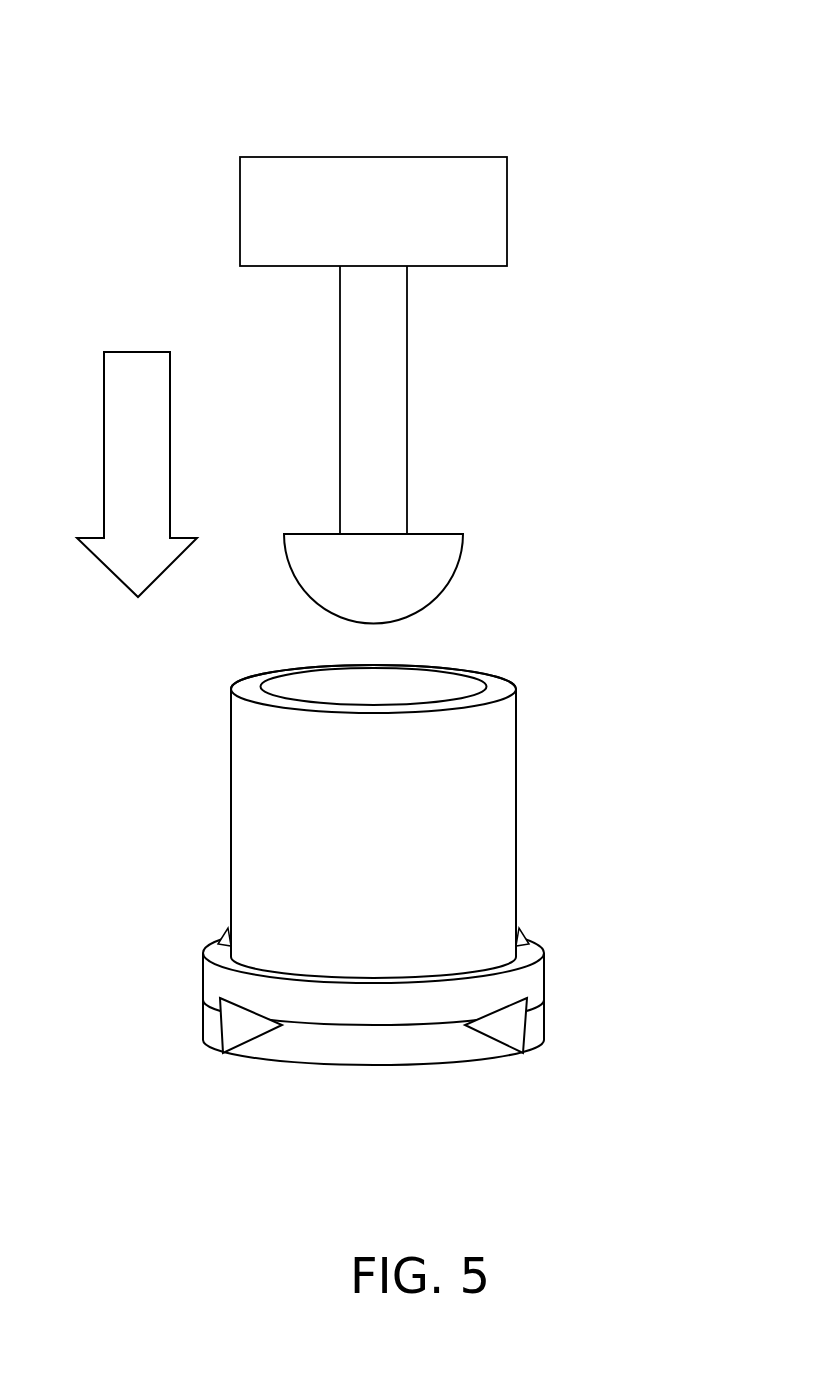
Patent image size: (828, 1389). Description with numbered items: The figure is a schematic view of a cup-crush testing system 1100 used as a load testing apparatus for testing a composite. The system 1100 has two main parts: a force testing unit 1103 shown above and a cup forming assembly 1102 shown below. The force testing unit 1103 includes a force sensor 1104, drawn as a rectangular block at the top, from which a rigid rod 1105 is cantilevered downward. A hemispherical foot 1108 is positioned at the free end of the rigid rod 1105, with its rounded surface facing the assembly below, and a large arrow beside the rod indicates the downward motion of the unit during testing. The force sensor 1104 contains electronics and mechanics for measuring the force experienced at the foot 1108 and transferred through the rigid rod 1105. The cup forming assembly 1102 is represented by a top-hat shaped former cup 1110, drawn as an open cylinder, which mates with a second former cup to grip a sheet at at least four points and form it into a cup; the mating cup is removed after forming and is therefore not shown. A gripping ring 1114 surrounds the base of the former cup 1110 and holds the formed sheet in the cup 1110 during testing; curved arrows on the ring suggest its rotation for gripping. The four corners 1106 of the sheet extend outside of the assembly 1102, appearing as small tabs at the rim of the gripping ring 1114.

The cup-crush testing system 1100 is at (213, 110).
The force testing unit 1103 is at (449, 345).
The force sensor 1104 is at (508, 212).
The rigid rod 1105 is at (408, 400).
The hemispherical foot 1108 is at (455, 572).
The cup forming assembly 1102 is at (400, 856).
The former cup 1110 is at (517, 815).
The gripping ring 1114 is at (545, 1015).
The corners of sheet 1106 is at (225, 935).